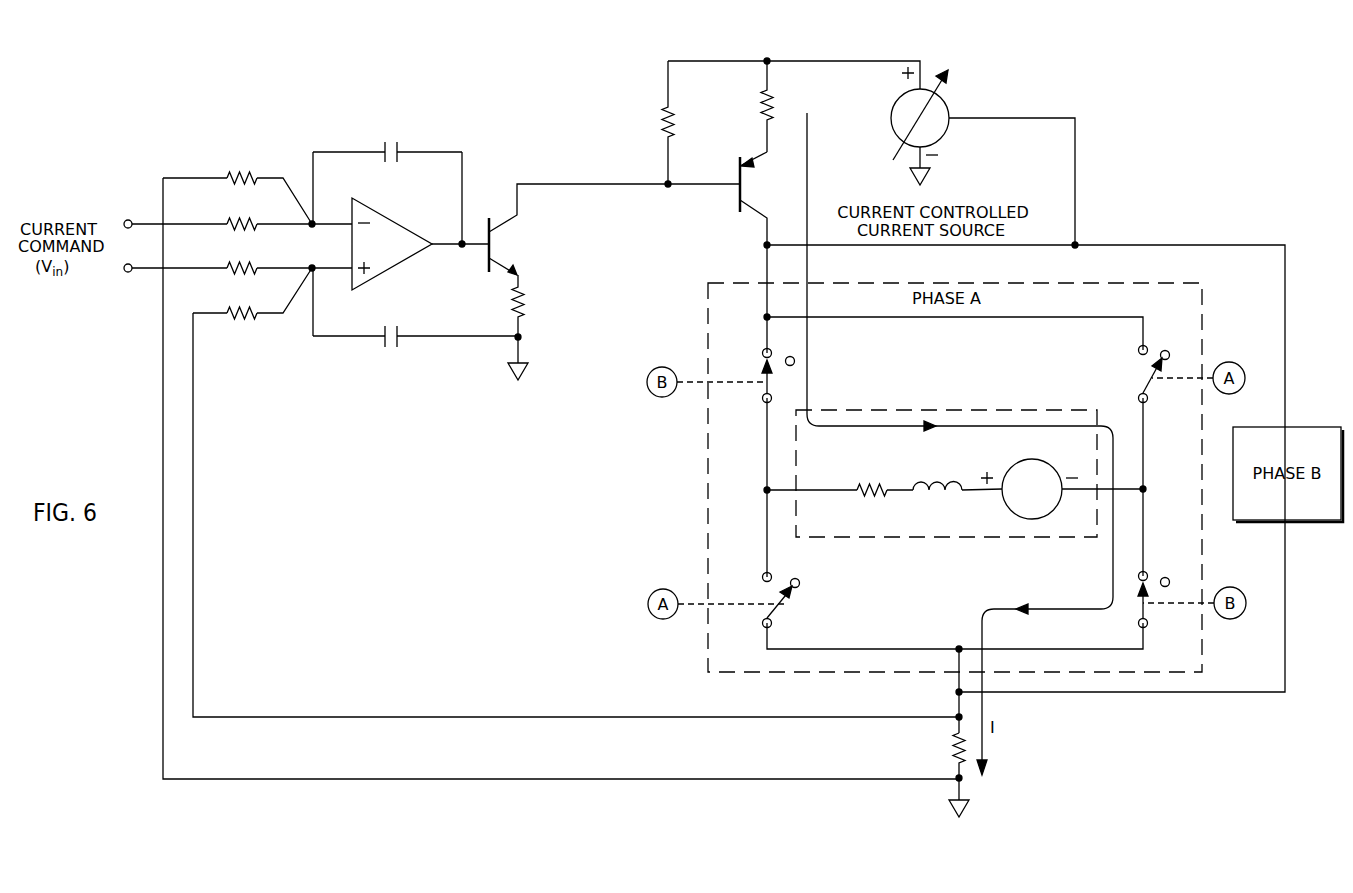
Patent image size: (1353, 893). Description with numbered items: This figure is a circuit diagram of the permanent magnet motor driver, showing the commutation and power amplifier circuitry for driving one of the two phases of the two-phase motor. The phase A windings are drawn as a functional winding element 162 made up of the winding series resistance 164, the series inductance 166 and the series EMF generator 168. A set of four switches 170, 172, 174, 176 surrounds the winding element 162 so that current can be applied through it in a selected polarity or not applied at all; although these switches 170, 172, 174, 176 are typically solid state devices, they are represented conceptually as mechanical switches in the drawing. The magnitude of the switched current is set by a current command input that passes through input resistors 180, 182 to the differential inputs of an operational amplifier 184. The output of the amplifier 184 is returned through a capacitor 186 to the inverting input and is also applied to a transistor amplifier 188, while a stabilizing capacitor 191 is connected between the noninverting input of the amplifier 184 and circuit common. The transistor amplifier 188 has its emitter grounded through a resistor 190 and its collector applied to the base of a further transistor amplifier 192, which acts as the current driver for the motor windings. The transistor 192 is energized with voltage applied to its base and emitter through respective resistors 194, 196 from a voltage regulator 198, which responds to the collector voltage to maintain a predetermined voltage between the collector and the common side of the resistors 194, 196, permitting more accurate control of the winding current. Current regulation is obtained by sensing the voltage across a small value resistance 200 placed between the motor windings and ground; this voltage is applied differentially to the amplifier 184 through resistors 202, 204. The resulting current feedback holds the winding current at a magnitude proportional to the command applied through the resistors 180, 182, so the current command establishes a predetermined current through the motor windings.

The winding element 162 is at (865, 408).
The winding series resistance 164 is at (863, 485).
The series inductance 166 is at (937, 498).
The series EMF generator 168 is at (1005, 505).
The switch 170 is at (762, 389).
The switch 172 is at (1140, 613).
The switch 174 is at (1137, 385).
The switch 176 is at (780, 608).
The input resistor 180 is at (243, 218).
The input resistor 182 is at (243, 262).
The operational amplifier 184 is at (384, 232).
The capacitor 186 is at (390, 140).
The transistor amplifier 188 is at (497, 237).
The resistor 190 is at (513, 303).
The stabilizing capacitor 191 is at (392, 350).
The transistor amplifier 192 is at (745, 198).
The resistor 194 is at (663, 128).
The resistor 196 is at (760, 110).
The voltage regulator 198 is at (950, 133).
The resistance 200 is at (953, 753).
The resistor 202 is at (243, 172).
The resistor 204 is at (248, 308).